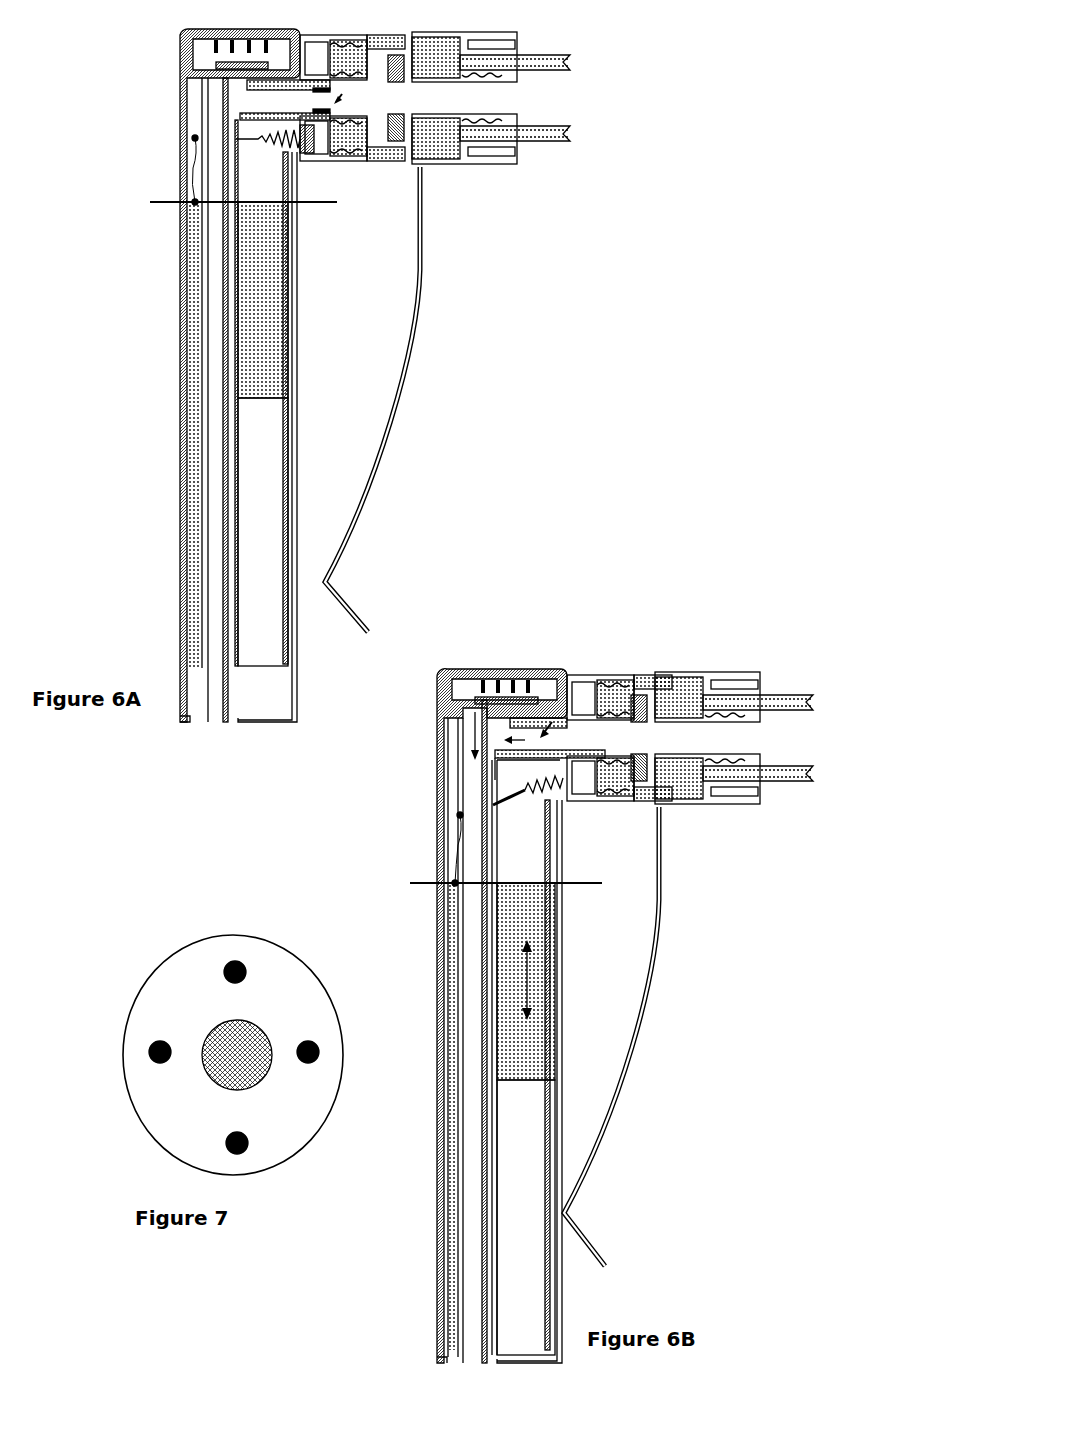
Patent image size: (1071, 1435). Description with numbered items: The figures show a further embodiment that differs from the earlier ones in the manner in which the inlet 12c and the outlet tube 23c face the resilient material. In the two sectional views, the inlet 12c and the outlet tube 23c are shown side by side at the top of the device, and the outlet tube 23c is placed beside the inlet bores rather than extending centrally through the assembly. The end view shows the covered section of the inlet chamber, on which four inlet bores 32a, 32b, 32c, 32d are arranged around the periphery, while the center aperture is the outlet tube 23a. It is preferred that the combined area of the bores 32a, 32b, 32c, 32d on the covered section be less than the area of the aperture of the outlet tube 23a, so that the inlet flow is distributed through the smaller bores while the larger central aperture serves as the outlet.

In FIG. 6A, the inlet 12c is at (372, 38).
In FIG. 6B, the inlet 12c is at (584, 672).
In FIG. 6A, the outlet tube 23c is at (211, 291).
In FIG. 6B, the outlet tube 23c is at (470, 787).
In FIG. 7, the outlet tube 23a is at (272, 1023).
In FIG. 7, the bore 32a is at (245, 954).
In FIG. 7, the bore 32b is at (250, 1150).
In FIG. 7, the bore 32c is at (158, 1064).
In FIG. 7, the bore 32d is at (320, 1050).